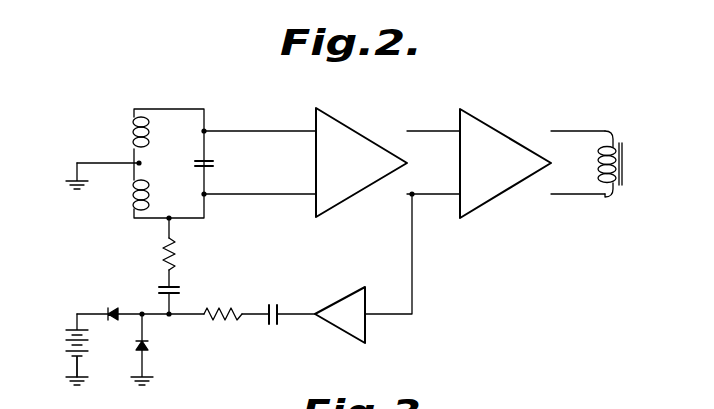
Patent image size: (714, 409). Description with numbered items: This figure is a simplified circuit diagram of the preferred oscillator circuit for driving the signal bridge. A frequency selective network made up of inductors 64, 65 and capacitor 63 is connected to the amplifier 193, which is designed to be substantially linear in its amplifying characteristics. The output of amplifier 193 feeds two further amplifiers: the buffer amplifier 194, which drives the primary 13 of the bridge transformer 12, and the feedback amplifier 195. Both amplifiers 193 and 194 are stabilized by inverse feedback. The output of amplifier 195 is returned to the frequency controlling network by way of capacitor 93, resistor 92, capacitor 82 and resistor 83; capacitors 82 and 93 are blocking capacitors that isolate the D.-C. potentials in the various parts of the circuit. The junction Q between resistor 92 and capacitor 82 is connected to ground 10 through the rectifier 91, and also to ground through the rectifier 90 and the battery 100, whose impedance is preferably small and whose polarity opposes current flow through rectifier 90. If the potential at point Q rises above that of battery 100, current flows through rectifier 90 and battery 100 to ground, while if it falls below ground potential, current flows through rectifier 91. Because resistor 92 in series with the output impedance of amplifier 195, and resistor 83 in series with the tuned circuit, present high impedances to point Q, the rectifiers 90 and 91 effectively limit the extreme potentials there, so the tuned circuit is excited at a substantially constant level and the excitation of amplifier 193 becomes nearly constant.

The ground 10 is at (74, 193).
The bridge transformer 12 is at (627, 176).
The primary 13 is at (598, 160).
The capacitor 63 is at (214, 167).
The inductor 64 is at (130, 113).
The inductor 65 is at (133, 200).
The capacitor 82 is at (180, 293).
The resistor 83 is at (178, 262).
The rectifier 90 is at (112, 307).
The rectifier 91 is at (149, 345).
The resistor 92 is at (231, 309).
The capacitor 93 is at (278, 306).
The battery 100 is at (70, 357).
The amplifier stage 193 is at (358, 173).
The buffer amplifier 194 is at (502, 173).
The feedback amplifier 195 is at (358, 324).
The junction Q is at (171, 316).